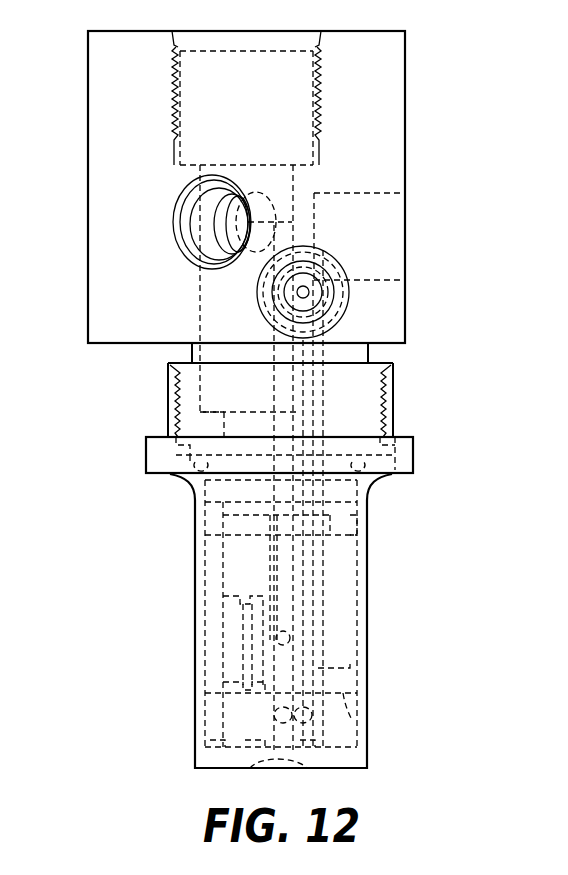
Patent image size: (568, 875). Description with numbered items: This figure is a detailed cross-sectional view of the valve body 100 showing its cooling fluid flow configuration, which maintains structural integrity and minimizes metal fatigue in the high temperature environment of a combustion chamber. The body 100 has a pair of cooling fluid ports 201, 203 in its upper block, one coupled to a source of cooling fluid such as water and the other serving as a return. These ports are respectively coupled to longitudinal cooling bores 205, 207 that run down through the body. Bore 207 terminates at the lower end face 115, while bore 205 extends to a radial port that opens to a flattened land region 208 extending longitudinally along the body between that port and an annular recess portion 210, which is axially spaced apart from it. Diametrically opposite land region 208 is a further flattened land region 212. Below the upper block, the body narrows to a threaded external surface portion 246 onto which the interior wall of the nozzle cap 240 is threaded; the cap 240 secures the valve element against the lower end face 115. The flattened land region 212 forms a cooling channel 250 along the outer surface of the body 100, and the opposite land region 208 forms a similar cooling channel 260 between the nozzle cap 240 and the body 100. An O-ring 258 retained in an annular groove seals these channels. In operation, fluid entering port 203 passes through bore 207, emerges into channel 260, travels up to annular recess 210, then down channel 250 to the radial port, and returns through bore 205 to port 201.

The valve body 100 is at (405, 110).
The cooling fluid port 201 is at (185, 212).
The cooling fluid port 203 is at (338, 262).
The longitudinal cooling bore 205 is at (272, 338).
The longitudinal cooling bore 207 is at (325, 395).
The threaded external surface portion 246 is at (168, 413).
The O-ring 258 is at (382, 437).
The nozzle cap 240 is at (413, 453).
The annular recess portion 210 is at (365, 521).
The cooling channel 250 is at (263, 572).
The cooling channel 260 is at (281, 621).
The flattened land region 208 is at (288, 668).
The flattened land region 212 is at (312, 677).
The lower end face 115 is at (355, 722).